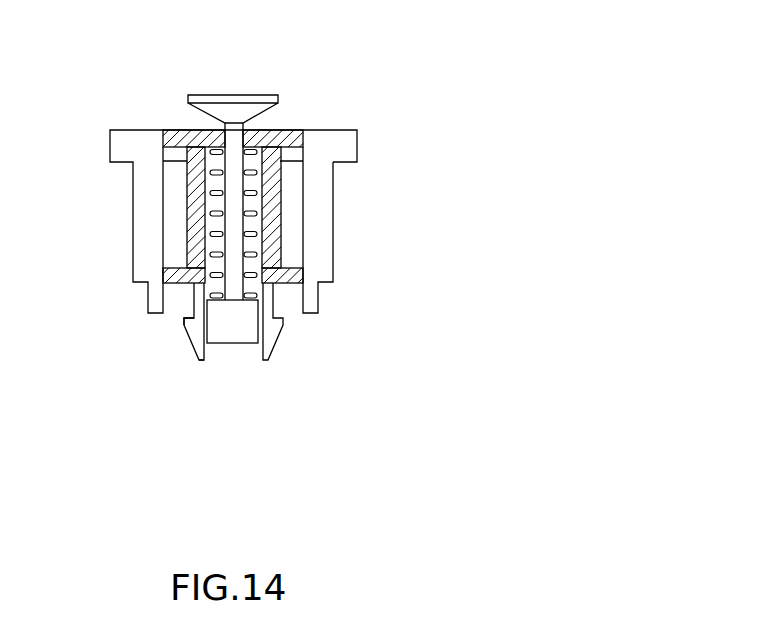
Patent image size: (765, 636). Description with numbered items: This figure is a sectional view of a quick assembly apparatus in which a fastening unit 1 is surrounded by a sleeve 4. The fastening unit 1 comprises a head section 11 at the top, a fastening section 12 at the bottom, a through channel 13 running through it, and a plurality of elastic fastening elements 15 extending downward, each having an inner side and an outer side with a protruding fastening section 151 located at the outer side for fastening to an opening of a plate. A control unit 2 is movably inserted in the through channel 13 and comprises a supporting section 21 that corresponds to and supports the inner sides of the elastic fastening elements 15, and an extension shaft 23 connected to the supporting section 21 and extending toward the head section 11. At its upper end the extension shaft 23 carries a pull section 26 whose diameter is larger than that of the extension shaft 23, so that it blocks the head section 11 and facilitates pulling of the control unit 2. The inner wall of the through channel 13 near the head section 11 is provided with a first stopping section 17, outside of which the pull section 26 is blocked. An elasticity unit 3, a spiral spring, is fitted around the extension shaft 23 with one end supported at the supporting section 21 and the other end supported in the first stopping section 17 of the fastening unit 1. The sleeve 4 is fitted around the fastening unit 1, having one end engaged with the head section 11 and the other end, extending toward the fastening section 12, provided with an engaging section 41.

The fastening unit 1 is at (184, 159).
The head section 11 is at (163, 146).
The fastening section 12 is at (203, 366).
The through channel 13 is at (215, 223).
The elastic fastening elements 15 is at (189, 368).
The protruding fastening section 151 is at (181, 323).
The first stopping section 17 is at (217, 143).
The control unit 2 is at (281, 206).
The supporting section 21 is at (237, 320).
The extension shaft 23 is at (233, 162).
The pull section 26 is at (232, 105).
The elasticity unit 3 is at (258, 212).
The sleeve 4 is at (272, 205).
The engaging section 41 is at (318, 297).